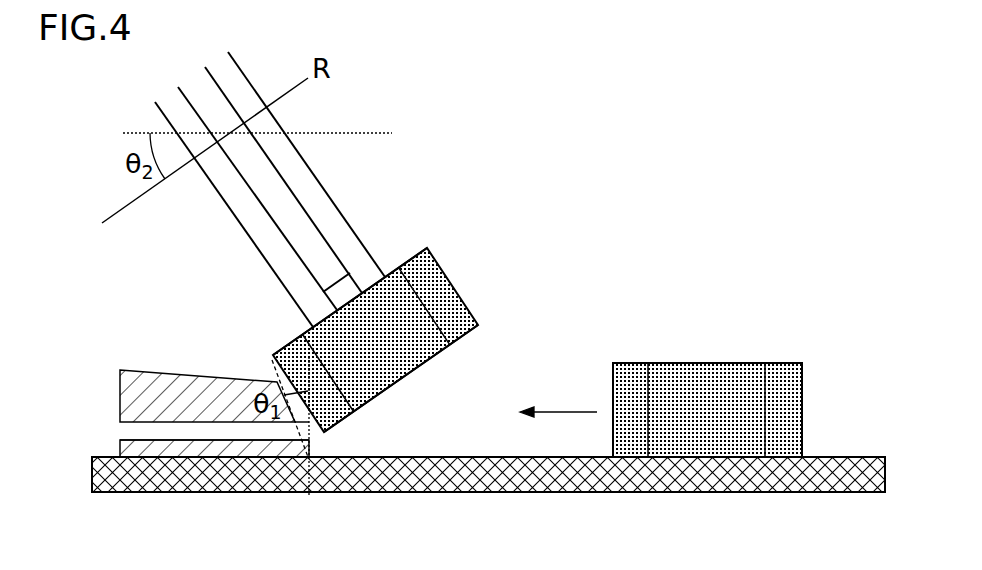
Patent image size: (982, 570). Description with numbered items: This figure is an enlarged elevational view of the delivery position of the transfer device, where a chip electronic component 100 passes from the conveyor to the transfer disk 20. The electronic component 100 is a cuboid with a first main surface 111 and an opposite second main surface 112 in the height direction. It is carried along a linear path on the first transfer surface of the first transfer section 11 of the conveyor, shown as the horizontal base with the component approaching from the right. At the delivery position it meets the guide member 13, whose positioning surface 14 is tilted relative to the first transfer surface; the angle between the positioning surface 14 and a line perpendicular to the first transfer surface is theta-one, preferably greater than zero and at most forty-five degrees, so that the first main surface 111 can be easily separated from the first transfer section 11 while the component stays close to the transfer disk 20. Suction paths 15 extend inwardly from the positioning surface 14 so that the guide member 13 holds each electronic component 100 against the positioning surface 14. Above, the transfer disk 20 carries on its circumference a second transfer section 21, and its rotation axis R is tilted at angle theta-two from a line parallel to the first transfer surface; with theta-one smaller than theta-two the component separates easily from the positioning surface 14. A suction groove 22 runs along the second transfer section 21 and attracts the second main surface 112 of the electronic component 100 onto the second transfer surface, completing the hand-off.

The first transfer section 11 is at (832, 455).
The guide member 13 is at (130, 393).
The positioning surface 14 is at (303, 455).
The suction path 15 is at (130, 430).
The transfer disk 20 is at (262, 268).
The second transfer section 21 is at (240, 202).
The suction groove 22 is at (288, 215).
The electronic component 100 is at (455, 272).
The first main surface 111 is at (388, 387).
The second main surface 112 is at (373, 283).